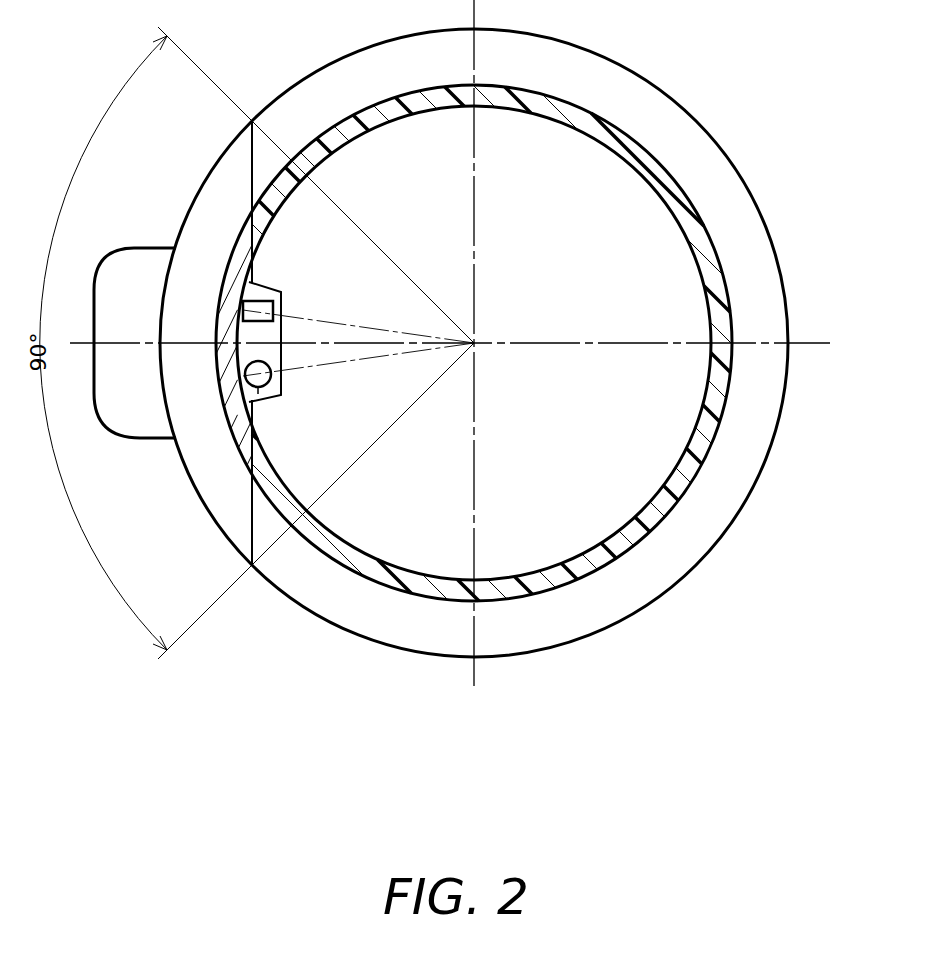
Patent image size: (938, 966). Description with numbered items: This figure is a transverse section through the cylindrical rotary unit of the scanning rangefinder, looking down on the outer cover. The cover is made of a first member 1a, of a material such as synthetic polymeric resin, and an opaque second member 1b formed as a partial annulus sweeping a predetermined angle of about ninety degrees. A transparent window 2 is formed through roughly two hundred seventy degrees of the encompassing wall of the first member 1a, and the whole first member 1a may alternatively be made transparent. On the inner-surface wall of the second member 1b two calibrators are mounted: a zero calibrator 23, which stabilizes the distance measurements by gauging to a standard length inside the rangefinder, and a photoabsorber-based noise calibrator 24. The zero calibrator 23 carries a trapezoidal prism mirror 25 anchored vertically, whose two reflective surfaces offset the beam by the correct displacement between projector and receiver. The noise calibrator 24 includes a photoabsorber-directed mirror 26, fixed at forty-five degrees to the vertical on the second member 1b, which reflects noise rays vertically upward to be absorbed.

The first member 1a is at (667, 162).
The second member 1b is at (198, 192).
The transparent window 2 is at (716, 283).
The zero calibrator 23 is at (277, 270).
The noise calibrator 24 is at (286, 411).
The trapezoidal prism mirror 25 is at (263, 305).
The photoabsorber-directed mirror 26 is at (253, 404).